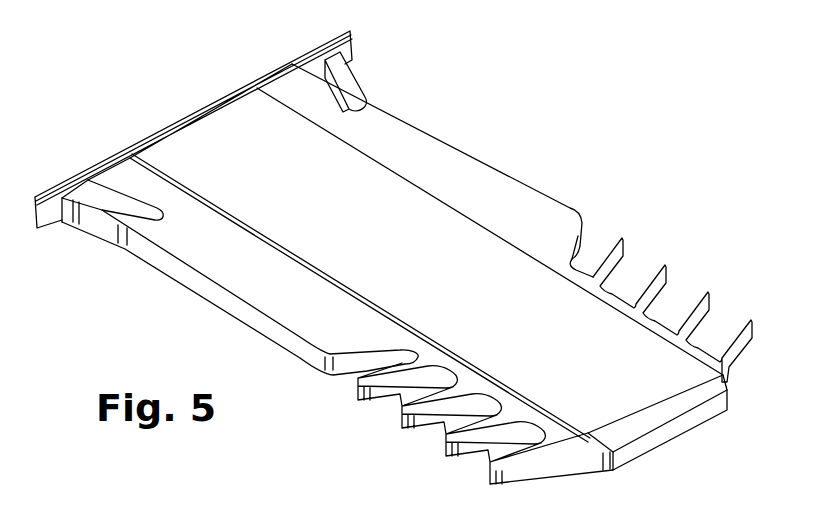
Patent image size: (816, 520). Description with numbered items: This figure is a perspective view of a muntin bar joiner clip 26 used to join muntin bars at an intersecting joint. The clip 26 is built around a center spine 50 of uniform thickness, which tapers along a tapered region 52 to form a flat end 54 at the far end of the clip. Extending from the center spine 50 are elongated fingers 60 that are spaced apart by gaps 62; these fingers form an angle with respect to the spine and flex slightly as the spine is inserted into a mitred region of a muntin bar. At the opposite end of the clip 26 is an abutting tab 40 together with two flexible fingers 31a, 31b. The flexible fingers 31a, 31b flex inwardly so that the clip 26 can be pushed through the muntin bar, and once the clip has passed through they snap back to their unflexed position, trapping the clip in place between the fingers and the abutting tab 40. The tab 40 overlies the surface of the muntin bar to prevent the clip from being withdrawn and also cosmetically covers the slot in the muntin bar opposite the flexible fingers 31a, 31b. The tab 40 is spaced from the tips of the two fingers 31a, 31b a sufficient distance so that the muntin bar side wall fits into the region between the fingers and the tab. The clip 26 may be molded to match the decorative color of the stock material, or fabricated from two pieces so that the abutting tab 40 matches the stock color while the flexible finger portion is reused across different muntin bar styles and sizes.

The clip 26 is at (571, 190).
The flexible finger 31a is at (348, 75).
The flexible finger 31b is at (104, 212).
The abutting tab 40 is at (54, 192).
The center spine 50 is at (373, 279).
The tapered region 52 is at (630, 427).
The flat end 54 is at (693, 419).
The elongated fingers 60 is at (755, 345).
The gaps 62 is at (482, 464).